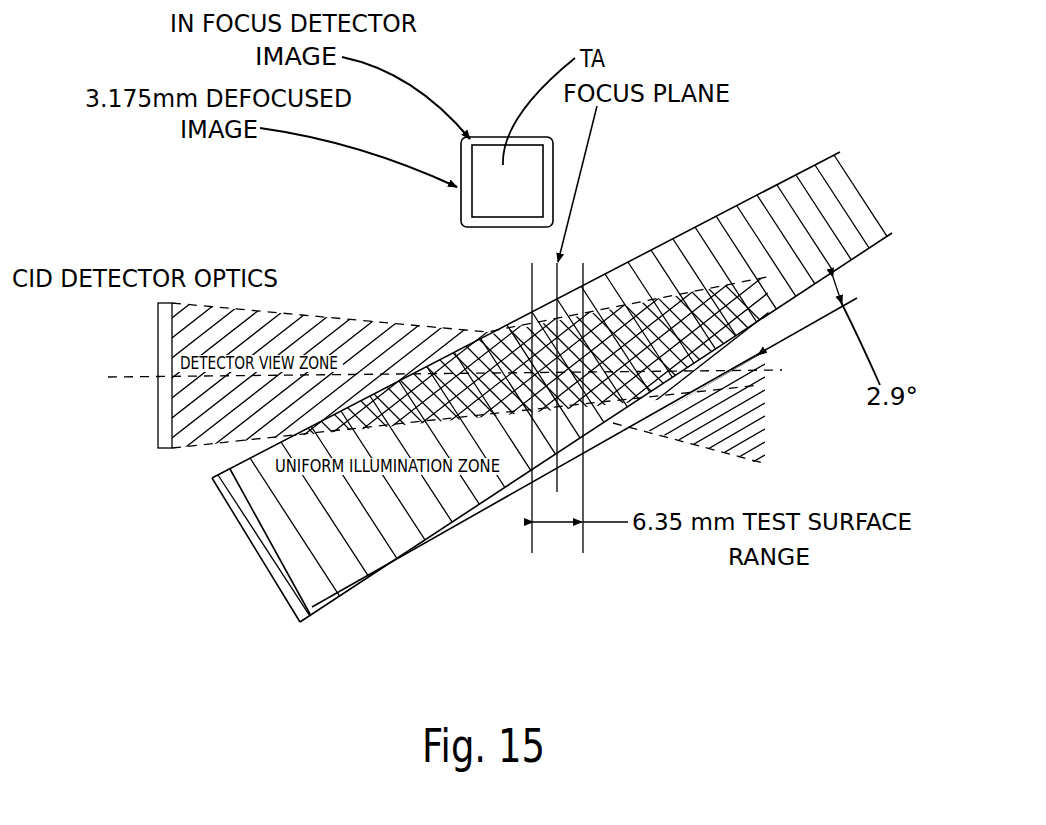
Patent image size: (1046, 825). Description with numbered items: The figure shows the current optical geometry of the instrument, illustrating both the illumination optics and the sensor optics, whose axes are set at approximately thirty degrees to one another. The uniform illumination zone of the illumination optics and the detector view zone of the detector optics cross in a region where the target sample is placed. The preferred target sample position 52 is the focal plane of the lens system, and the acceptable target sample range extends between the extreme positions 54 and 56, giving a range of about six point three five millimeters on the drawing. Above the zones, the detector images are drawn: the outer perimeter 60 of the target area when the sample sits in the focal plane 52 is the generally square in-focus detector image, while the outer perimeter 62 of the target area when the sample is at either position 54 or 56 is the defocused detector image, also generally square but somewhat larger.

The preferred target sample position 52 is at (557, 480).
The extreme position 54 is at (583, 471).
The extreme position 56 is at (528, 446).
The outer perimeter of the target area in the focal plane 60 is at (544, 190).
The outer perimeter of the target area at the extreme positions 62 is at (553, 166).